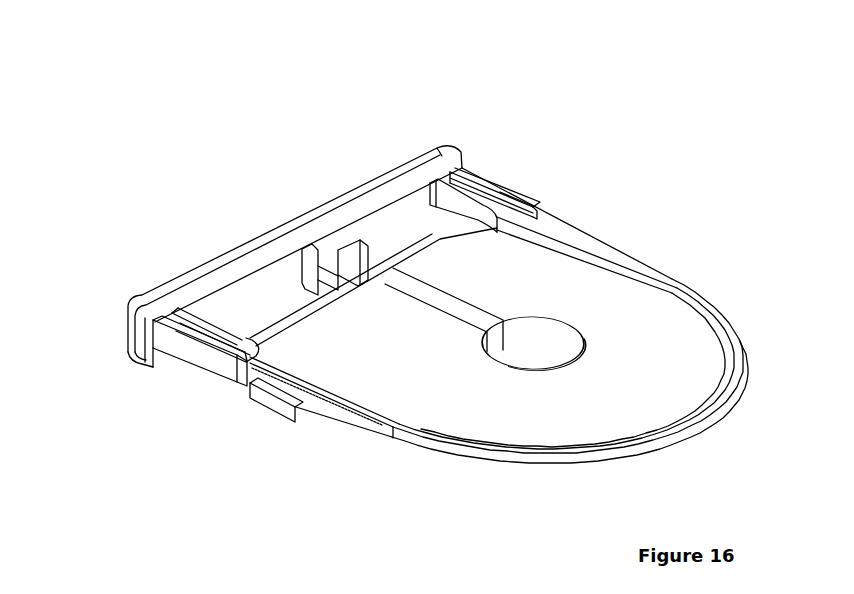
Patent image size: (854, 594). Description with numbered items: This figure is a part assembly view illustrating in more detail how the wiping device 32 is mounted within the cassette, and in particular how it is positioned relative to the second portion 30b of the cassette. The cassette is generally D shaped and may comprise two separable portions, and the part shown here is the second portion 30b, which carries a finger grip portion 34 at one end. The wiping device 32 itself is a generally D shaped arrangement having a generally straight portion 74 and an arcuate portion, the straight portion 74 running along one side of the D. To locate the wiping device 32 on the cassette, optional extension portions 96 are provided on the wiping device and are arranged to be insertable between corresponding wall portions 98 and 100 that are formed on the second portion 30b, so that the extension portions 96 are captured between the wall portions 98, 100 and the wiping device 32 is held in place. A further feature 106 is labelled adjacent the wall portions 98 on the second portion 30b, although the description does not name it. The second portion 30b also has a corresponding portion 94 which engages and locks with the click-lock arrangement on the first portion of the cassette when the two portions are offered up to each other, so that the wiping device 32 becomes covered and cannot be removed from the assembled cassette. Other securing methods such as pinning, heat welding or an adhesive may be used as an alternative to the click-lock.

The second portion 30b is at (377, 147).
The wiping device 32 is at (558, 285).
The finger grip portion 34 is at (262, 240).
The straight portion 74 is at (532, 223).
The corresponding portion 94 is at (350, 255).
The extension portions 96 is at (197, 332).
The wall portion 98 is at (205, 323).
The wall portion 100 is at (175, 343).
The bar end 106 is at (515, 202).